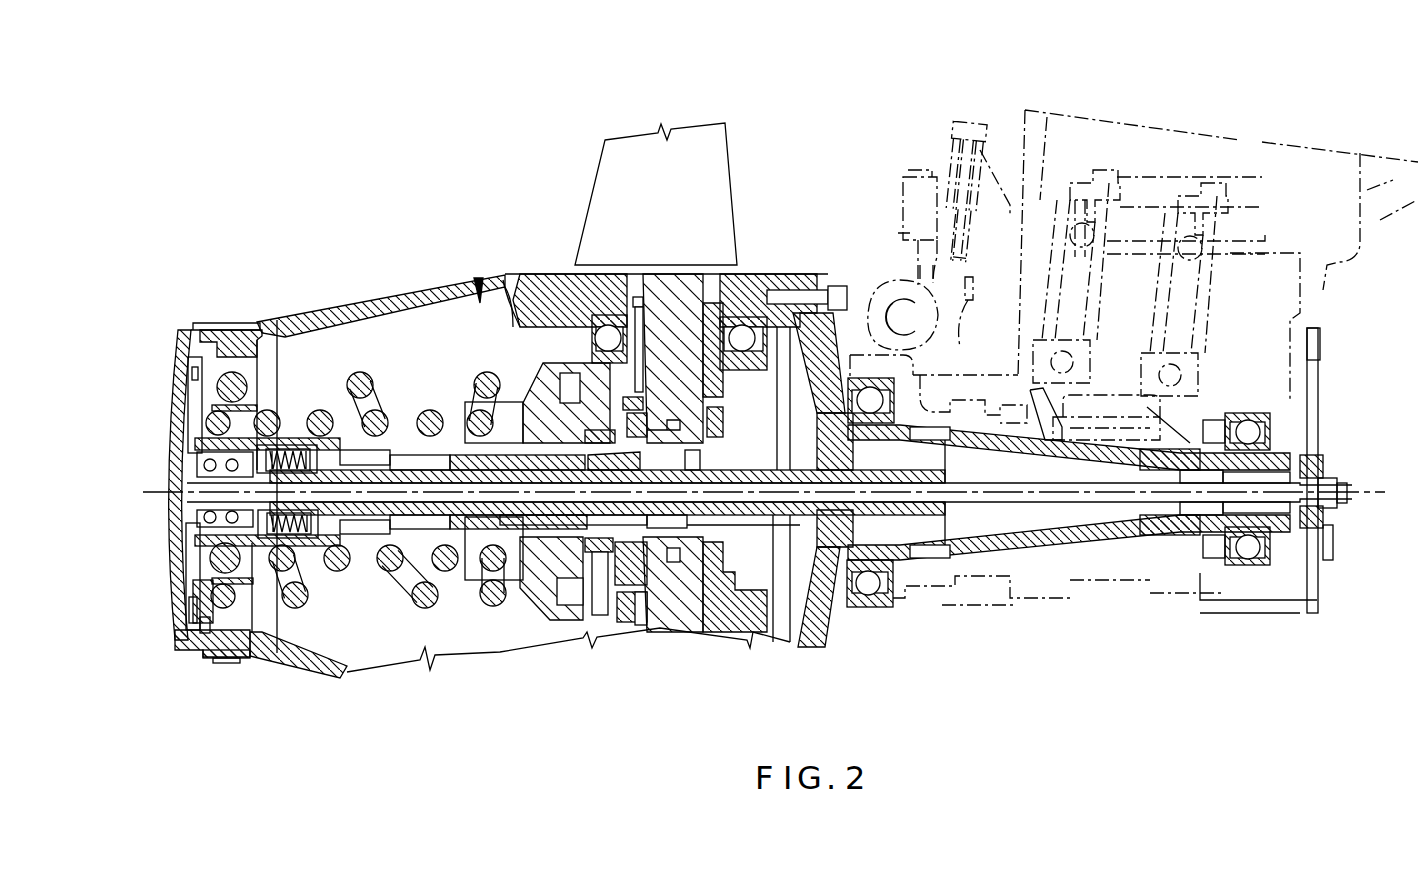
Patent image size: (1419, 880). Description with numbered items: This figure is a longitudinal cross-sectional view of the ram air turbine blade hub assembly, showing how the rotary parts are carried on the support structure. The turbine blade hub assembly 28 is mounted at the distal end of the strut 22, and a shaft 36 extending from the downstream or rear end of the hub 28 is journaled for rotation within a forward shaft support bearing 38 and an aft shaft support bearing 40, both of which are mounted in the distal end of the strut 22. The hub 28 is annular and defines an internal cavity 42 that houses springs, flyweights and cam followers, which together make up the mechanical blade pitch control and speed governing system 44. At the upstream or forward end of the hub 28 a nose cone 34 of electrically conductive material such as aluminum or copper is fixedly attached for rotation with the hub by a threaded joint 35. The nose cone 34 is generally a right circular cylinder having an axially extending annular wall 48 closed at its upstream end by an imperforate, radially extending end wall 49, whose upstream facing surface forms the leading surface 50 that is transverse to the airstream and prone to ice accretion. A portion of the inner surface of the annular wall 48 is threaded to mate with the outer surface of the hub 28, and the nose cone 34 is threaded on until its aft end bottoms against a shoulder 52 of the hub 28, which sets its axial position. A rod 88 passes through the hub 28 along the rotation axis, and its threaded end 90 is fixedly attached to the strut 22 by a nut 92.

The strut 22 is at (1322, 327).
The turbine blade hub assembly 28 is at (553, 273).
The nose cone 34 is at (177, 357).
The threaded joint 35 is at (236, 348).
The shaft 36 is at (1045, 548).
The forward shaft support bearing 38 is at (862, 607).
The aft shaft support bearing 40 is at (1230, 572).
The internal cavity 42 is at (416, 347).
The mechanical blade pitch control and speed governing system 44 is at (480, 290).
The annular wall 48 is at (203, 660).
The end wall 49 is at (172, 610).
The leading surface 50 is at (168, 522).
The shoulder 52 is at (228, 662).
The rod 88 is at (1160, 505).
The threaded end 90 is at (1318, 470).
The nut 92 is at (1345, 497).